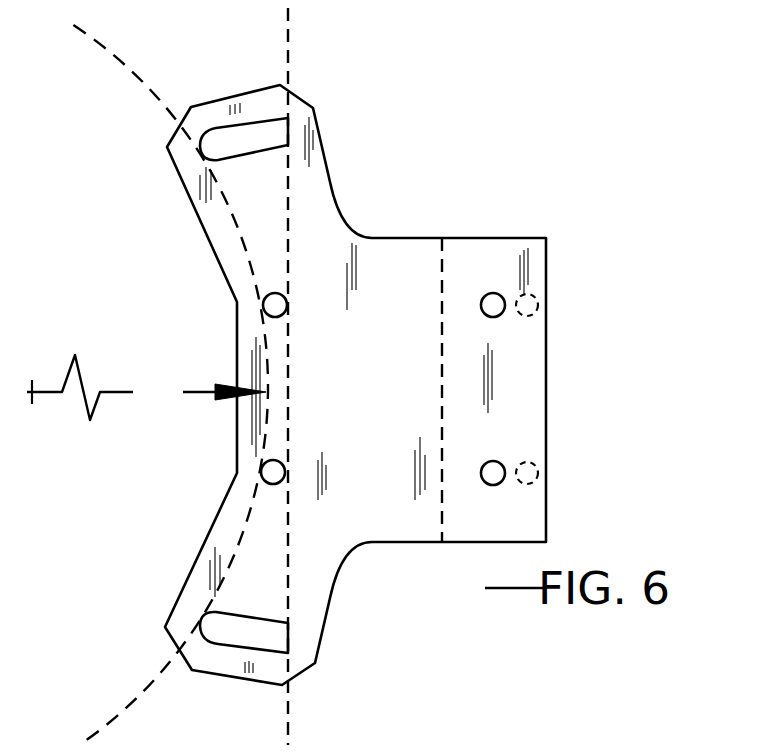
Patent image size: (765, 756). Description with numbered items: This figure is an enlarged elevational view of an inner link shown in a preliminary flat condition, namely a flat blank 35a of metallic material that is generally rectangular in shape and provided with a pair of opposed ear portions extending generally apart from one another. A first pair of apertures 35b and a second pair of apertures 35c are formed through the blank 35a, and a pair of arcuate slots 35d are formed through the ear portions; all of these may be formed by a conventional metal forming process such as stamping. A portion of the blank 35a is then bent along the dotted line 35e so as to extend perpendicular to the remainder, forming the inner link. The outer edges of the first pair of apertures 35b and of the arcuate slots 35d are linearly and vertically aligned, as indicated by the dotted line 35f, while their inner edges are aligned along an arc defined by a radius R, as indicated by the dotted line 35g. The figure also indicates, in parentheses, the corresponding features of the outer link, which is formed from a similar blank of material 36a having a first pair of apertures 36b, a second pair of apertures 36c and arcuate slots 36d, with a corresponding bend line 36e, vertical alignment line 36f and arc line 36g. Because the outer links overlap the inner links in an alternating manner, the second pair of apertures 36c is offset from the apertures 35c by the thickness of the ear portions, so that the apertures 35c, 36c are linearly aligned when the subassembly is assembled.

The flat blank 35a is at (386, 385).
The blank of material 36a is at (370, 257).
The first pair of apertures 35b is at (325, 388).
The first pair of apertures 36b is at (270, 384).
The second pair of apertures 35c is at (497, 463).
The second pair of apertures 36c is at (538, 305).
The arcuate slots 35d is at (296, 385).
The arcuate slots 36d is at (245, 150).
The dotted line 35e is at (387, 390).
The bend line 36e is at (442, 394).
The dotted line 35f is at (409, 376).
The center line 36f is at (290, 42).
The dotted line 35g is at (179, 375).
The arc line 36g is at (106, 48).
The radius R is at (146, 387).